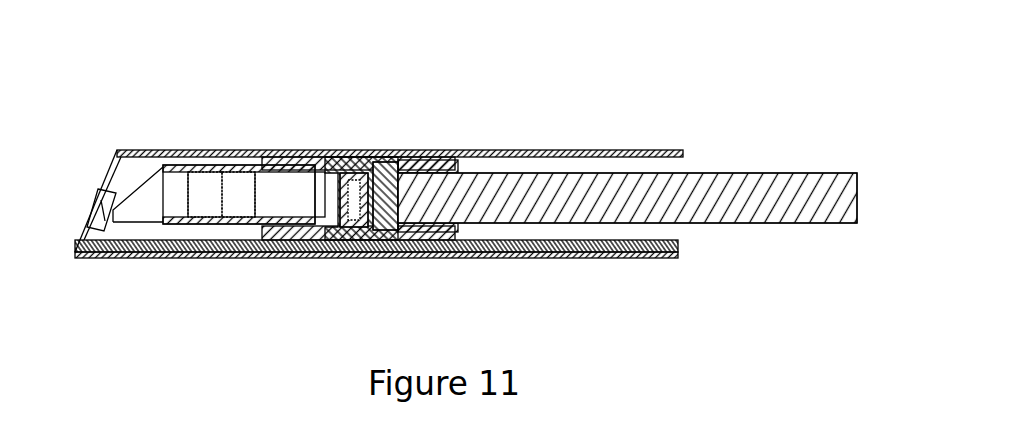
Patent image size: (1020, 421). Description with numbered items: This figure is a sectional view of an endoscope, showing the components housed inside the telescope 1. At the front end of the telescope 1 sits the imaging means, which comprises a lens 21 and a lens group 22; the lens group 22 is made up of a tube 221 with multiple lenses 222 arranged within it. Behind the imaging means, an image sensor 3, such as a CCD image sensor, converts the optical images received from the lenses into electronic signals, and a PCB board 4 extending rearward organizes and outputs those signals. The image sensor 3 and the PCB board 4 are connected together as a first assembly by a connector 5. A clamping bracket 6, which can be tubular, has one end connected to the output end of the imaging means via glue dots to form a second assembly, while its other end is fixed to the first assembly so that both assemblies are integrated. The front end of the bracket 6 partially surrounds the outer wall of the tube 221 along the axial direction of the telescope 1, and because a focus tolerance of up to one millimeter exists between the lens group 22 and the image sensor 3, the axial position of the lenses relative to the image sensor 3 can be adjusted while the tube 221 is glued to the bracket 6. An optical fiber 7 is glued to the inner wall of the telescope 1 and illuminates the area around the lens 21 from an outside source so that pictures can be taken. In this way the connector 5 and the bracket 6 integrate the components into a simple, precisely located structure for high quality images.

The telescope 1 is at (132, 260).
The optical fiber 7 is at (88, 260).
The lens 21 is at (96, 193).
The lens group 22 is at (244, 112).
The lenses 222 is at (207, 187).
The tube 221 is at (237, 170).
The clamping bracket 6 is at (336, 165).
The image sensor 3 is at (350, 227).
The connector 5 is at (397, 173).
The PCB board 4 is at (510, 198).